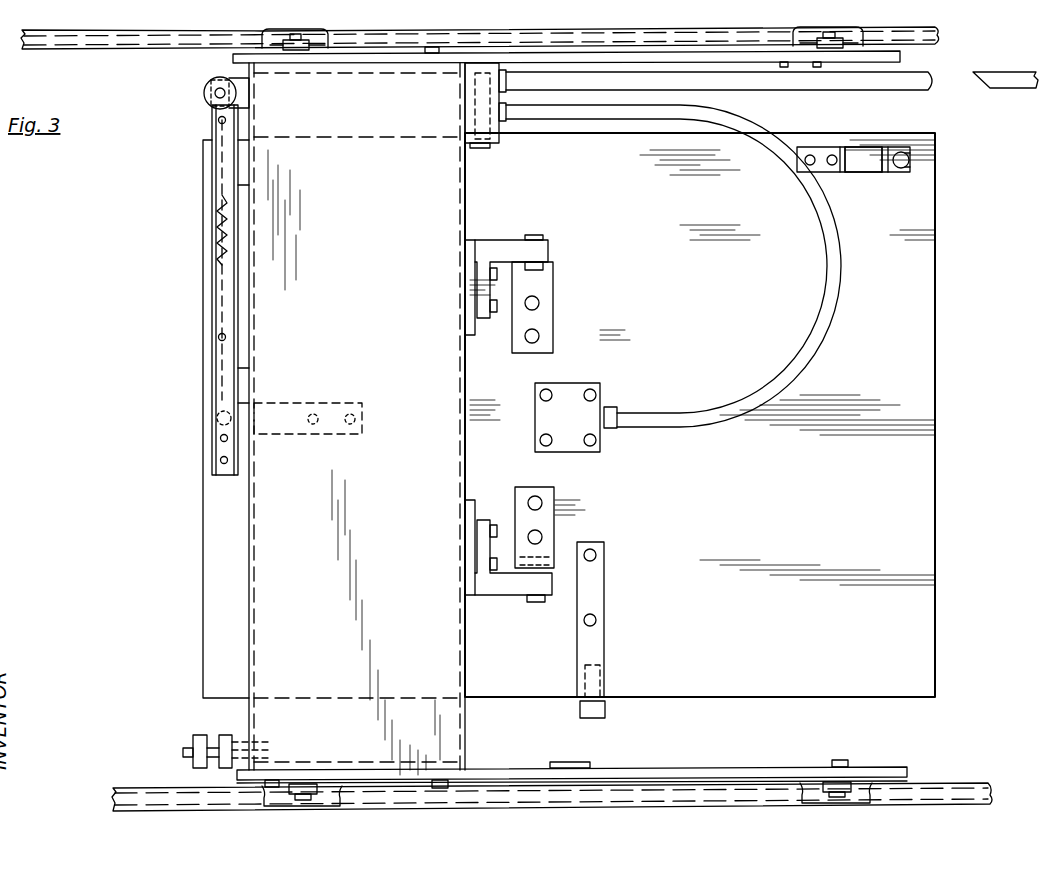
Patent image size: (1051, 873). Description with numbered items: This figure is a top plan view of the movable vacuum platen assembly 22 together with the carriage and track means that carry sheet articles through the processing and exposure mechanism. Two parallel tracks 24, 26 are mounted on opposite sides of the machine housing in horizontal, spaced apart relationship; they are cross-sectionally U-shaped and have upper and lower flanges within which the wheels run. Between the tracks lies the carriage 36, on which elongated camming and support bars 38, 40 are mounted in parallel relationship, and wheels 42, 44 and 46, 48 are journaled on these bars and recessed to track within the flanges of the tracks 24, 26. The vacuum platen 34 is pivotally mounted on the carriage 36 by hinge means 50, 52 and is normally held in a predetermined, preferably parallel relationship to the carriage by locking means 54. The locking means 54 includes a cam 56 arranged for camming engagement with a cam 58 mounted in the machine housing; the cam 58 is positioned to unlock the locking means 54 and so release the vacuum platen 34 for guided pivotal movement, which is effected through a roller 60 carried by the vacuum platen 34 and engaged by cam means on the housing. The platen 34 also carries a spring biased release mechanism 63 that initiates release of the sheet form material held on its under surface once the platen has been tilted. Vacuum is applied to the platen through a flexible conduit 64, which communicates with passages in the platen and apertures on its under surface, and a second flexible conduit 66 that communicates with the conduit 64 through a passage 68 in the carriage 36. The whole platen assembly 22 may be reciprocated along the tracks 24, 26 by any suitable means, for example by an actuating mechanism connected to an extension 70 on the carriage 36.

The movable platen assembly 22 is at (829, 132).
The track 24 is at (938, 44).
The track 26 is at (935, 792).
The vacuum platen 34 is at (922, 506).
The carriage 36 is at (357, 419).
The camming and support bar 38 is at (888, 56).
The camming and support bar 40 is at (795, 769).
The wheel 42 is at (313, 793).
The wheel 44 is at (847, 789).
The wheel 46 is at (296, 49).
The wheel 48 is at (829, 48).
The hinge means 50 is at (517, 597).
The hinge means 52 is at (505, 241).
The locking means 54 is at (209, 321).
The cam 56 is at (205, 85).
The cam 58 is at (1017, 88).
The roller 60 is at (606, 711).
The spring biased release mechanism 63 is at (866, 173).
The flexible conduit 64 is at (657, 430).
The flexible conduit 66 is at (735, 78).
The passage 68 is at (480, 113).
The extension 70 is at (193, 760).